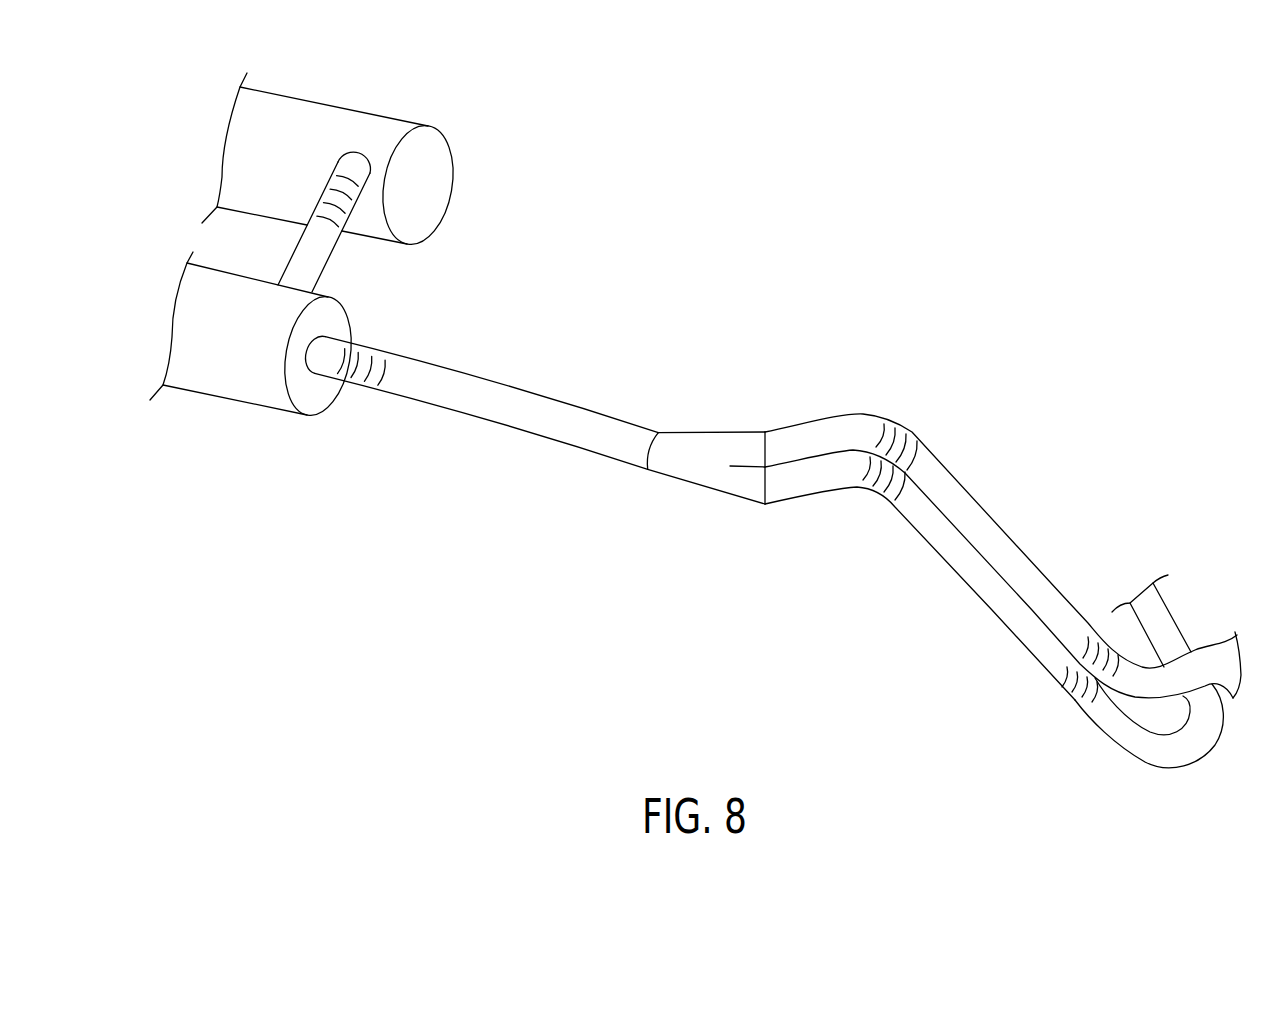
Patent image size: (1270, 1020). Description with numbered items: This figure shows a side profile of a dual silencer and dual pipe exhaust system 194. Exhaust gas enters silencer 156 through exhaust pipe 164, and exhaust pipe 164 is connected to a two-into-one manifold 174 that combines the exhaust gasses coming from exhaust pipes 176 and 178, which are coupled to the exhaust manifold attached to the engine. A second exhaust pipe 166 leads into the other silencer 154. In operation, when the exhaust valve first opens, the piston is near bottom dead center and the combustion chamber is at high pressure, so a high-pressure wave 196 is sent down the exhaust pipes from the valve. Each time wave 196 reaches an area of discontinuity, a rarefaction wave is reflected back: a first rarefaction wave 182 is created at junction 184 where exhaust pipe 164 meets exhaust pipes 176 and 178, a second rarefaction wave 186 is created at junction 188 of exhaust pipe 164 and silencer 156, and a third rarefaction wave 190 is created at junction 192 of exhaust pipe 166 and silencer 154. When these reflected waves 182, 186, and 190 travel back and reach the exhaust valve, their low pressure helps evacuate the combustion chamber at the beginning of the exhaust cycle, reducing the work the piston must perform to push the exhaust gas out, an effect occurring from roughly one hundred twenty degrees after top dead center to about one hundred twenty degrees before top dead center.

The silencer 154 is at (356, 111).
The silencer 156 is at (231, 399).
The exhaust pipe 164 is at (500, 384).
The exhaust pipe 166 is at (330, 257).
The 2-1 manifold 174 is at (720, 431).
The exhaust pipe 176 is at (977, 502).
The exhaust pipe 178 is at (958, 575).
The first rarefaction wave 182 is at (901, 428).
The junction 184 is at (706, 487).
The second rarefaction wave 186 is at (372, 349).
The junction 188 is at (307, 352).
The third rarefaction wave 190 is at (327, 202).
The junction 192 is at (347, 156).
The exhaust system 194 is at (862, 253).
The high-pressure wave 196 is at (1095, 636).